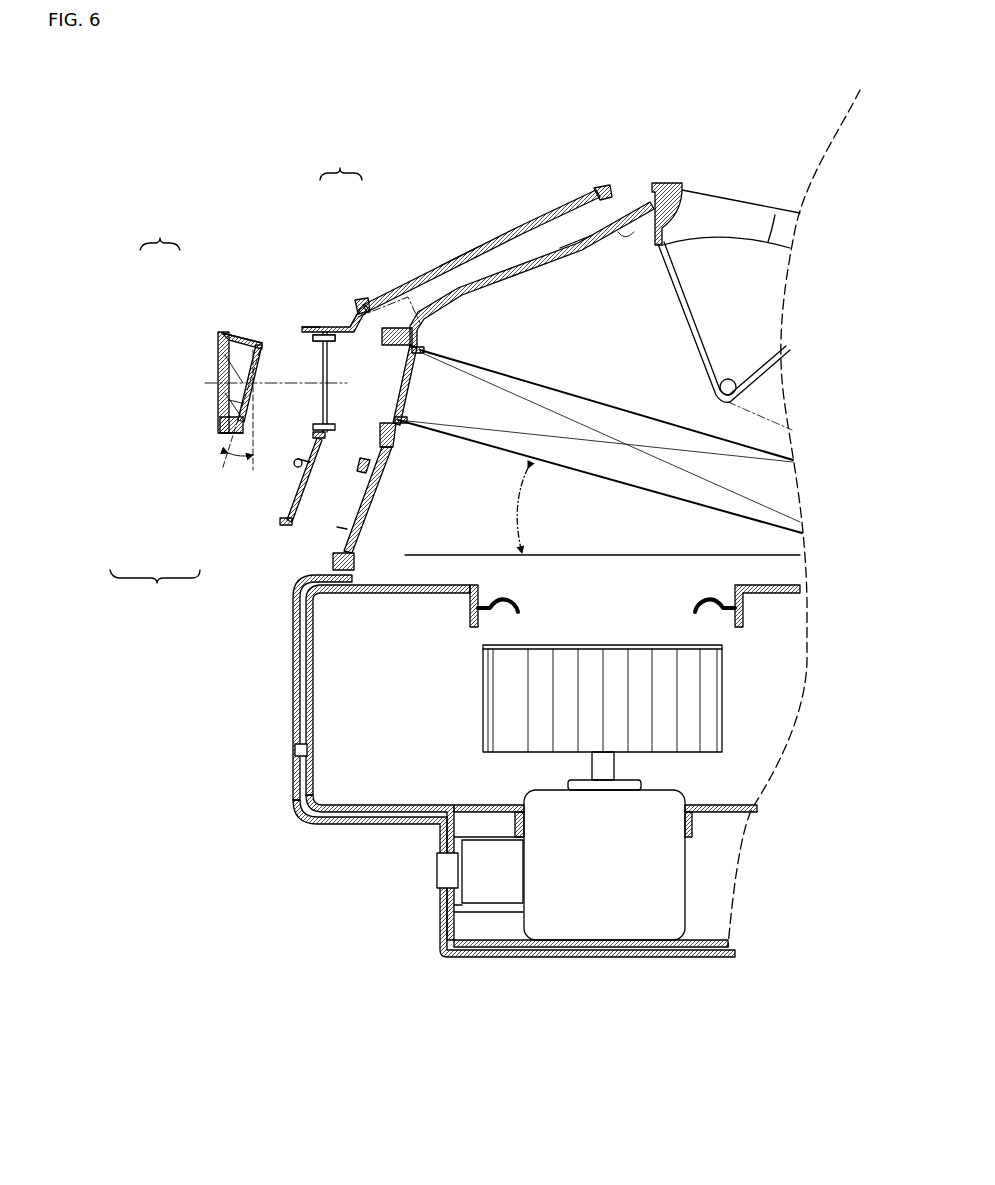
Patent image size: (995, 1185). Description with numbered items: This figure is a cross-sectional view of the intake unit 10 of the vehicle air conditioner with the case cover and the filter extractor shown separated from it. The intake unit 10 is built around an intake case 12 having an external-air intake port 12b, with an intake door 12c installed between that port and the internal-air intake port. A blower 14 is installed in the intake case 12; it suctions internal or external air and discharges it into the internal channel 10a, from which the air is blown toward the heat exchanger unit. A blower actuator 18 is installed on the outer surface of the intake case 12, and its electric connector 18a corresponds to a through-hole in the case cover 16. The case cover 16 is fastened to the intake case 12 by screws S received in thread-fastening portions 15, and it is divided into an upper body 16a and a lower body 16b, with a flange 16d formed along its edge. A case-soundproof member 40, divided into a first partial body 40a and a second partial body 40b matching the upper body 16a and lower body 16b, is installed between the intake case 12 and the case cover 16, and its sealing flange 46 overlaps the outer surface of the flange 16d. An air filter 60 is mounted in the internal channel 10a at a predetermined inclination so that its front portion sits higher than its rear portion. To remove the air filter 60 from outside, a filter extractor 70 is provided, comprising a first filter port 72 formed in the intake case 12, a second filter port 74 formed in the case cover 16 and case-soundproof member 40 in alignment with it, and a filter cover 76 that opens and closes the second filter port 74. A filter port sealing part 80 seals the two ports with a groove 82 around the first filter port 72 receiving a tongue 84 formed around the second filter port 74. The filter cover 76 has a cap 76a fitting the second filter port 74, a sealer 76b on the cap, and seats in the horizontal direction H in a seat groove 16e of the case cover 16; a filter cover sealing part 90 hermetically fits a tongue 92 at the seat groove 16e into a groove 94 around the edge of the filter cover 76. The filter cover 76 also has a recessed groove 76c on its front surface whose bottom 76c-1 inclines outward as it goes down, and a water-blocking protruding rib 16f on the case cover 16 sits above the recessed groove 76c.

The intake unit 10 is at (332, 838).
The internal channel 10a is at (702, 592).
The intake case 12 is at (627, 233).
The external-air intake port 12b is at (707, 215).
The intake door 12c is at (770, 237).
The blower 14 is at (505, 740).
The thread-fastening portion 15 is at (410, 330).
The case cover 16 is at (510, 237).
The upper body 16a is at (462, 260).
The lower body 16b is at (296, 658).
The flange 16d is at (600, 188).
The seat groove 16e is at (310, 328).
The water-blocking protruding rib 16f is at (352, 322).
The blower actuator 18 is at (493, 887).
The electric connector 18a is at (445, 880).
The case-soundproof member 40 is at (557, 247).
The first partial body 40a is at (570, 240).
The second partial body 40b is at (308, 688).
The sealing flange 46 is at (658, 183).
The air filter 60 is at (787, 497).
The filter extractor 70 is at (155, 589).
The first filter port 72 is at (357, 470).
The second filter port 74 is at (300, 466).
The filter cover 76 is at (221, 432).
The cap 76a is at (226, 405).
The sealer 76b is at (226, 425).
The recessed groove 76c is at (219, 347).
The bottom of recessed groove 76c-1 is at (228, 362).
The filter port sealing part 80 is at (341, 164).
The groove 82 is at (357, 300).
The tongue 84 is at (322, 330).
The filter cover sealing part 90 is at (160, 235).
The tongue 92 is at (302, 330).
The groove 94 is at (220, 333).
The horizontal direction H is at (228, 380).
The screw S is at (375, 322).